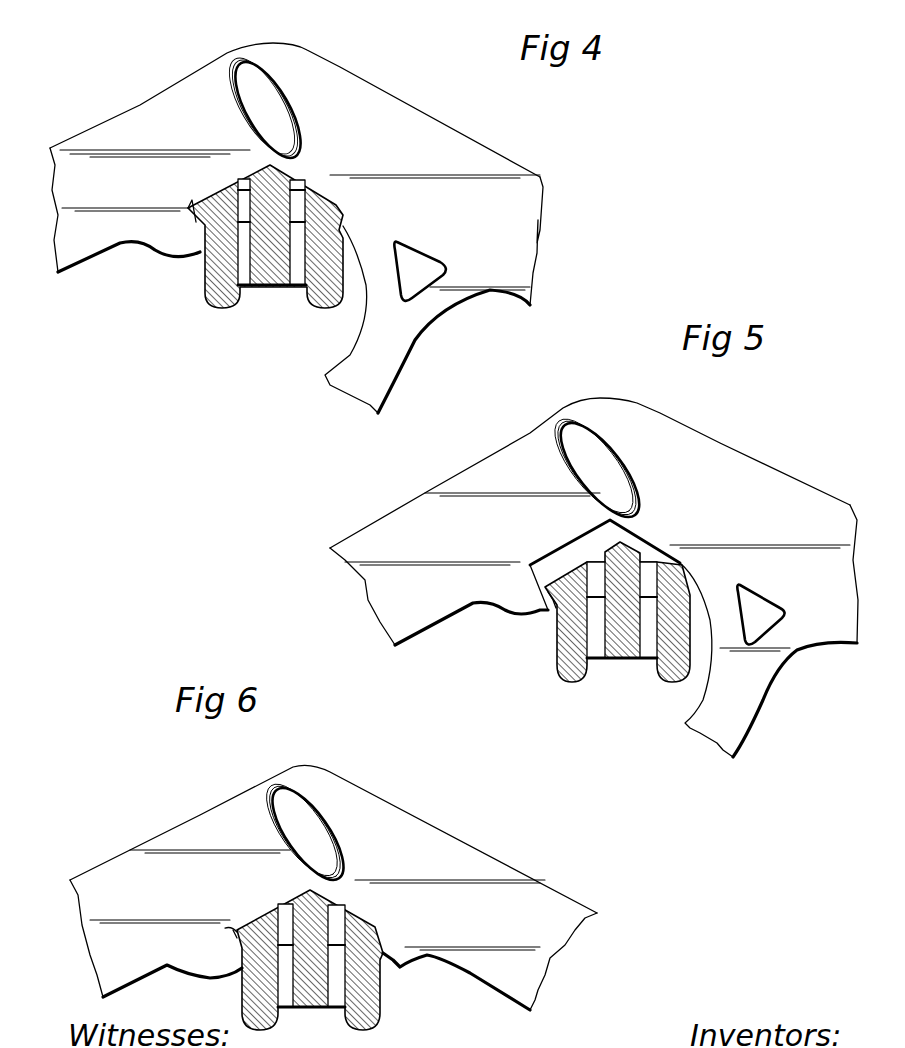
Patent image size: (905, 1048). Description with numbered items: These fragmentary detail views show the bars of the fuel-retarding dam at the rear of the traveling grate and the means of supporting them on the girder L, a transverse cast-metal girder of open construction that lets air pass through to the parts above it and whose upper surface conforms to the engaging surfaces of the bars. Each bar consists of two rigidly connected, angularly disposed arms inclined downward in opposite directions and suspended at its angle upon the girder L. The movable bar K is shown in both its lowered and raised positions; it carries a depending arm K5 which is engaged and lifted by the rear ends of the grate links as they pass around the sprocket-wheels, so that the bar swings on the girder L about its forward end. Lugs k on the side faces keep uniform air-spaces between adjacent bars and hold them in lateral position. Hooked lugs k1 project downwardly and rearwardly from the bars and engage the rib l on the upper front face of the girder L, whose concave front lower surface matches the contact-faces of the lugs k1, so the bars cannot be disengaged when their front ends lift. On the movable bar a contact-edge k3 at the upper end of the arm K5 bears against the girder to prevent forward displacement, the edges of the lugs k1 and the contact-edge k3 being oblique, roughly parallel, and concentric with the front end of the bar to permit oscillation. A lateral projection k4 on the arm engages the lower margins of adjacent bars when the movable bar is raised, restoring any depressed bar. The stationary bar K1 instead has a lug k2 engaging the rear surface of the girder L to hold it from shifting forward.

In FIG. 6, the bar K is at (433, 832).
In FIG. 4, the bar K1 is at (460, 148).
In FIG. 5, the bar K1 is at (760, 472).
In FIG. 4, the arm K5 is at (372, 400).
In FIG. 5, the arm K5 is at (712, 718).
In FIG. 4, the lug k is at (280, 118).
In FIG. 5, the lug k is at (617, 483).
In FIG. 6, the lug k is at (315, 835).
In FIG. 4, the lug k1 is at (180, 240).
In FIG. 5, the lug k1 is at (523, 602).
In FIG. 6, the lug k1 is at (213, 960).
In FIG. 6, the lug k2 is at (397, 957).
In FIG. 4, the contact-edge k3 is at (345, 228).
In FIG. 5, the contact-edge k3 is at (693, 582).
In FIG. 4, the lateral projection k4 is at (428, 260).
In FIG. 5, the lateral projection k4 is at (768, 612).
In FIG. 4, the girder L is at (275, 280).
In FIG. 5, the girder L is at (633, 652).
In FIG. 6, the girder L is at (322, 997).
In FIG. 4, the rib l is at (194, 207).
In FIG. 5, the rib l is at (551, 603).
In FIG. 6, the rib l is at (232, 932).